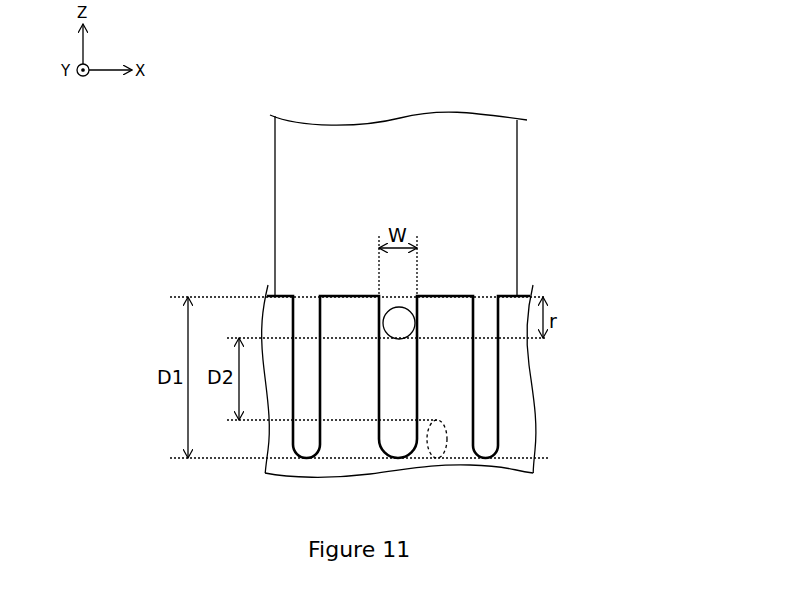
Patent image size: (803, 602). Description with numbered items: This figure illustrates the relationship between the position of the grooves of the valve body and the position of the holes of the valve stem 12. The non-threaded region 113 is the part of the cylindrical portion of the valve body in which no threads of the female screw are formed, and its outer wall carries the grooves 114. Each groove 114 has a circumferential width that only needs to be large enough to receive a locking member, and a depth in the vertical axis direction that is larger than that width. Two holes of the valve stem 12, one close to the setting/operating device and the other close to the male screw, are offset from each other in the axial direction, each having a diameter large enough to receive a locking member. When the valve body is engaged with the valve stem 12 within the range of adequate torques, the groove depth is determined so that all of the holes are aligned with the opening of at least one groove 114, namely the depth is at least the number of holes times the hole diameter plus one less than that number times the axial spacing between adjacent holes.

The valve stem 12 is at (498, 188).
The non-threaded region 113 is at (345, 310).
The groove 114 is at (493, 432).